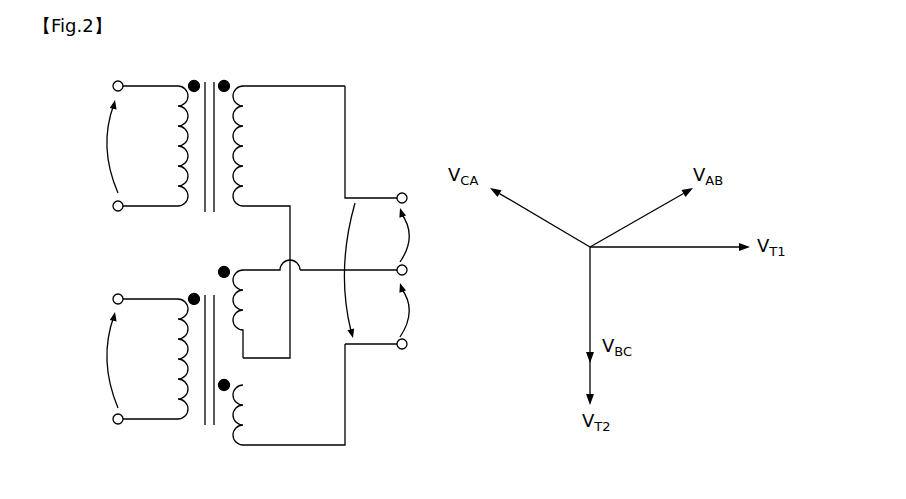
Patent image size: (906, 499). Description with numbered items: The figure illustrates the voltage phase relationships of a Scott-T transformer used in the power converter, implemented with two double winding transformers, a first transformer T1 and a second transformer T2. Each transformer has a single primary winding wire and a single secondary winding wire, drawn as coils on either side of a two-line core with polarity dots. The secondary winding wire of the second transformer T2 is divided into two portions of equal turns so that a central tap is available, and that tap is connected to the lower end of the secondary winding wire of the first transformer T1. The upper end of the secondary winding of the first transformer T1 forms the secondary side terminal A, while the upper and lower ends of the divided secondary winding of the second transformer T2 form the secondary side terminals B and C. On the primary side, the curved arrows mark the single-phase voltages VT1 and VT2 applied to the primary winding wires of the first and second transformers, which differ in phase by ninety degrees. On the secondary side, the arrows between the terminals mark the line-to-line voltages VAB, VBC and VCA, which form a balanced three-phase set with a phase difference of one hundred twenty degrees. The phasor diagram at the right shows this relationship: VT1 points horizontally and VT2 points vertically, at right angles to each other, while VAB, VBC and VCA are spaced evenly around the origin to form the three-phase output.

The first transformer T1 is at (229, 220).
The second transformer T2 is at (229, 367).
The secondary side terminal A is at (384, 147).
The secondary side terminal B is at (361, 270).
The secondary side terminal C is at (384, 344).
The primary side voltage of first transformer VT1 is at (92, 146).
The primary side voltage of second transformer VT2 is at (92, 360).
The line-to-line voltage VAB is at (420, 235).
The line-to-line voltage VBC is at (420, 310).
The line-to-line voltage VCA is at (329, 270).